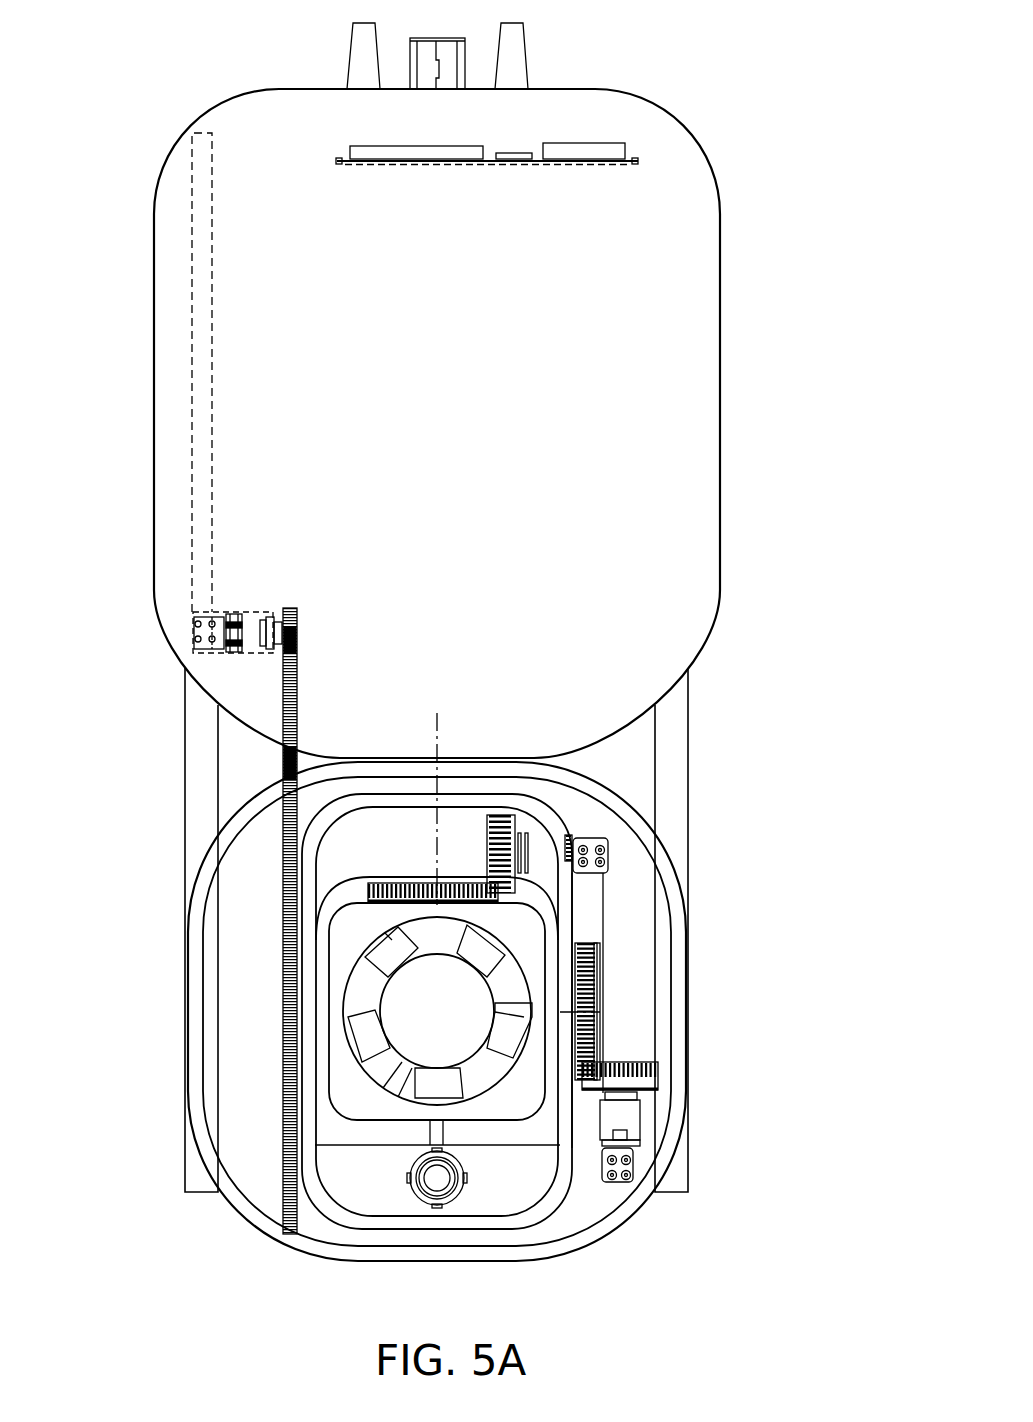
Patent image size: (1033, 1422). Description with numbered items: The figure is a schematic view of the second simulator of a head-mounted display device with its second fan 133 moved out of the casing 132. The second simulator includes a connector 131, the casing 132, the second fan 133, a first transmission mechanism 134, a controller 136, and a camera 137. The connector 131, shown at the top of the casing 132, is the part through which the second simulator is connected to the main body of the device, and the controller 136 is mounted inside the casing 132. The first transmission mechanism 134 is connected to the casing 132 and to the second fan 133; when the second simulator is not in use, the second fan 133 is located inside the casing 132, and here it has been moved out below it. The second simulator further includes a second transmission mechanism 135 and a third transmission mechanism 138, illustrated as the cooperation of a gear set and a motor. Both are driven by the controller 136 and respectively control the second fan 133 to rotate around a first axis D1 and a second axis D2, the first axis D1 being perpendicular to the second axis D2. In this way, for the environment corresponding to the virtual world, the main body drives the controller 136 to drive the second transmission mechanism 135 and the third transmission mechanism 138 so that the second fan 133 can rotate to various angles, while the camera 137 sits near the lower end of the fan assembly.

The connector 131 is at (440, 68).
The casing 132 is at (567, 266).
The second fan 133 is at (437, 1012).
The first transmission mechanism 134 is at (253, 617).
The second transmission mechanism 135 is at (623, 1122).
The controller 136 is at (427, 165).
The camera 137 is at (437, 1178).
The third transmission mechanism 138 is at (593, 857).
The first axis D1 is at (600, 1012).
The second axis D2 is at (437, 733).